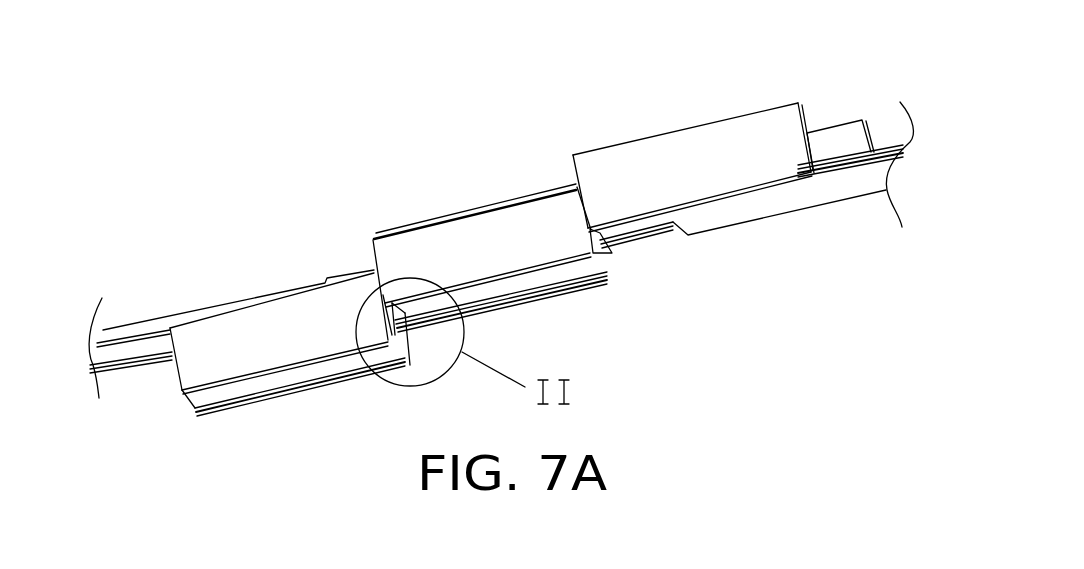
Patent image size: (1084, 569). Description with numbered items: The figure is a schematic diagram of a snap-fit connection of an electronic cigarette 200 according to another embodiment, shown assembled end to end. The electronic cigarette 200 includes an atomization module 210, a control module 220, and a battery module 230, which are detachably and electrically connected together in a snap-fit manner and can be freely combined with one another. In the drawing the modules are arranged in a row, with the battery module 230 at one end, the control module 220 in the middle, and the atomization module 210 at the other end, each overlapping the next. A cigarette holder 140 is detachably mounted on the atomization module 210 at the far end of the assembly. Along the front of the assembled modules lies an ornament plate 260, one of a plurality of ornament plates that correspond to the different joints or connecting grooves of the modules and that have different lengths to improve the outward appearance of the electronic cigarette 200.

The electronic cigarette 200 is at (550, 38).
The cigarette holder 140 is at (840, 140).
The atomization module 210 is at (658, 155).
The control module 220 is at (447, 250).
The battery module 230 is at (208, 340).
The ornament plate 260 is at (763, 208).